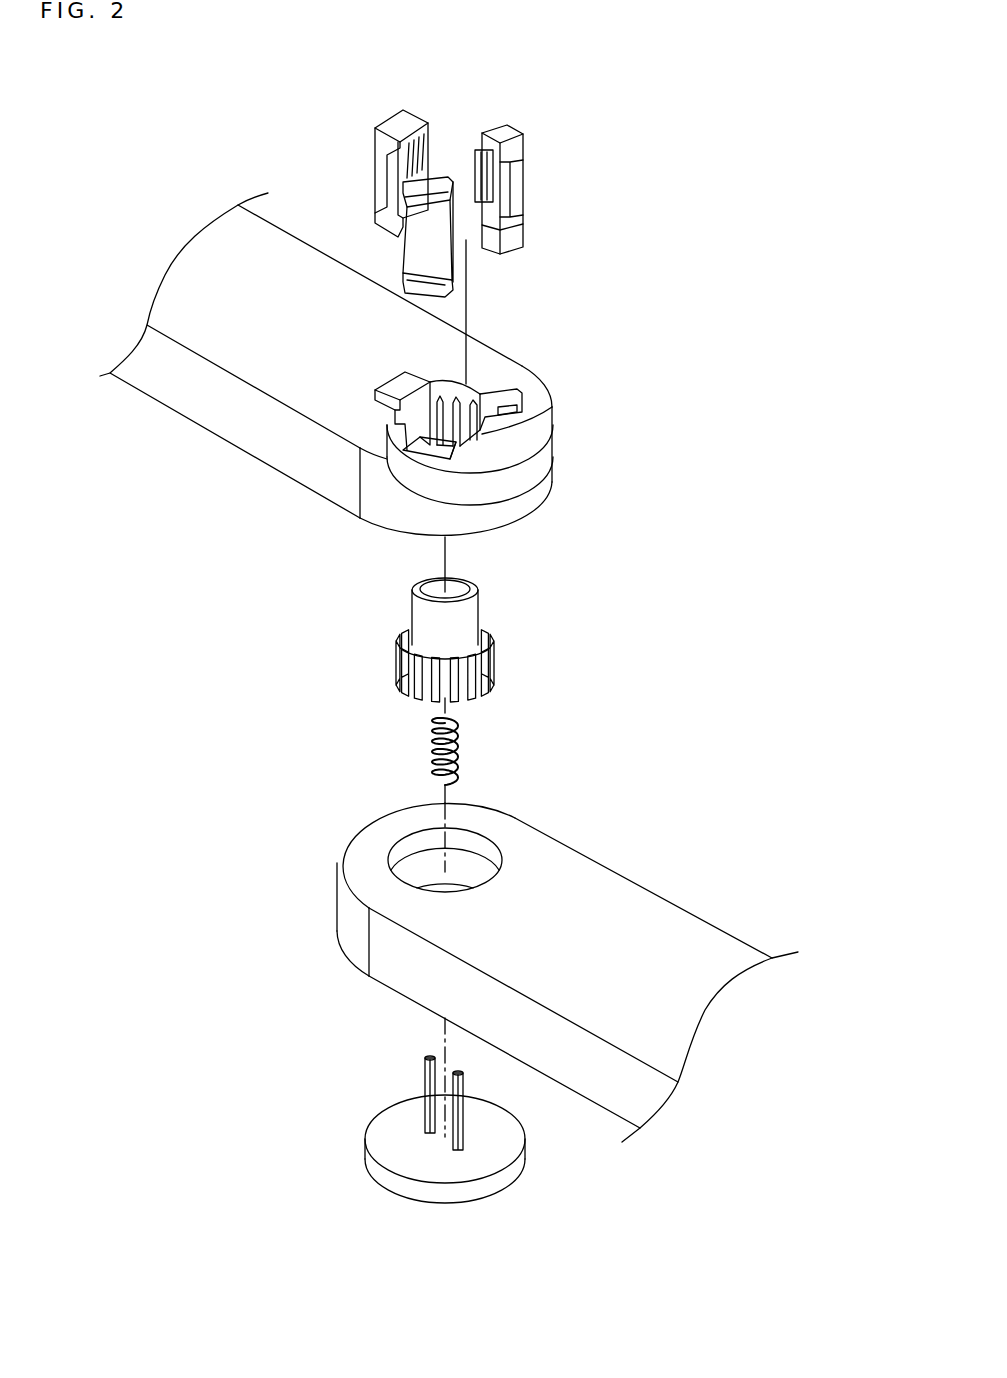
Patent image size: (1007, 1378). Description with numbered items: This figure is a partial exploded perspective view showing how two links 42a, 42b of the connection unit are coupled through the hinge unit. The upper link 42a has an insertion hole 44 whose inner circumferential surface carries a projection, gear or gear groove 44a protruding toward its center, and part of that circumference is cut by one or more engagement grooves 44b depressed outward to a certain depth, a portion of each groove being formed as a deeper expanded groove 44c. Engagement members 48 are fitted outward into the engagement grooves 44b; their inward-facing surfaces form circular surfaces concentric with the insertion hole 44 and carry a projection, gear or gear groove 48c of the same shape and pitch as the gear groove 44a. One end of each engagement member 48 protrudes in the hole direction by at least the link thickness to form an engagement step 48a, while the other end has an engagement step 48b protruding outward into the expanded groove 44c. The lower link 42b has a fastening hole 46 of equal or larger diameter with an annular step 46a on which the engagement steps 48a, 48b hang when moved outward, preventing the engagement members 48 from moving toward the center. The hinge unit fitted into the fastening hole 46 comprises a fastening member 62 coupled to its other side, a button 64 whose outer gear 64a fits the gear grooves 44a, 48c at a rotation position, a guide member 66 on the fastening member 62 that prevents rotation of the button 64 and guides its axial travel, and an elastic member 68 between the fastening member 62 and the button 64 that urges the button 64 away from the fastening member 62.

The link 42a is at (224, 266).
The link 42b is at (570, 941).
The insertion hole 44 is at (558, 392).
The projection, gear or gear groove 44a is at (500, 406).
The engagement groove 44b is at (546, 448).
The expanded groove 44c is at (517, 392).
The fastening hole 46 is at (450, 870).
The annular step 46a is at (463, 851).
The engagement member 48 is at (558, 247).
The engagement step 48a is at (514, 226).
The engagement step 48b is at (512, 168).
The projection, gear or gear groove 48c is at (490, 190).
The fastening member 62 is at (497, 1144).
The button 64 is at (425, 628).
The groove, gear groove, or gear 64a is at (417, 674).
The guide member 66 is at (460, 1108).
The elastic member 68 is at (457, 740).